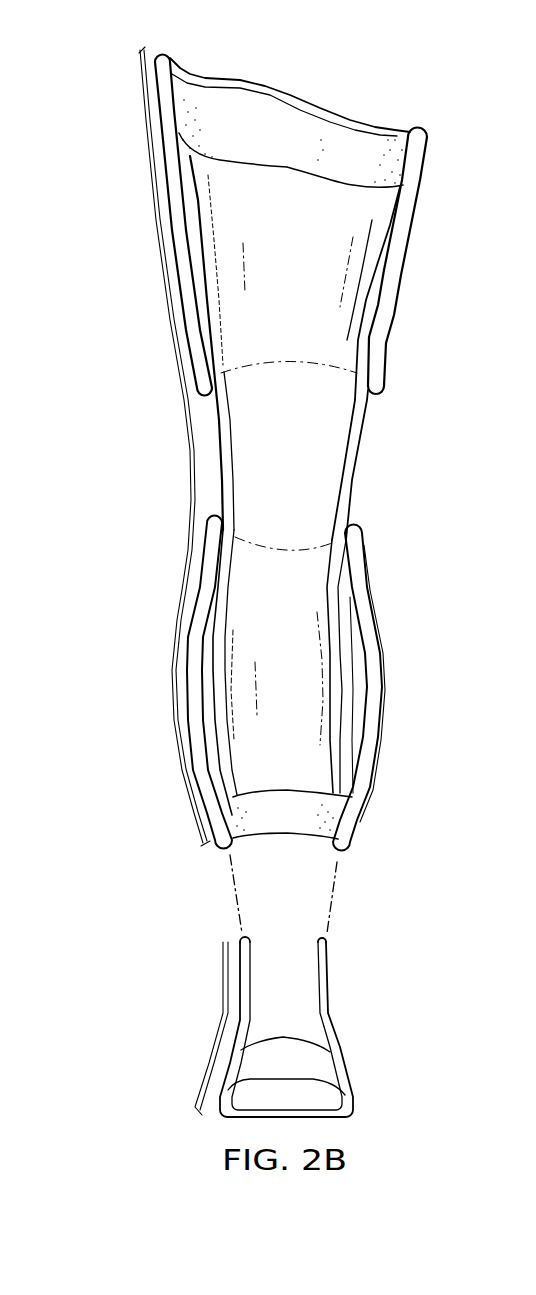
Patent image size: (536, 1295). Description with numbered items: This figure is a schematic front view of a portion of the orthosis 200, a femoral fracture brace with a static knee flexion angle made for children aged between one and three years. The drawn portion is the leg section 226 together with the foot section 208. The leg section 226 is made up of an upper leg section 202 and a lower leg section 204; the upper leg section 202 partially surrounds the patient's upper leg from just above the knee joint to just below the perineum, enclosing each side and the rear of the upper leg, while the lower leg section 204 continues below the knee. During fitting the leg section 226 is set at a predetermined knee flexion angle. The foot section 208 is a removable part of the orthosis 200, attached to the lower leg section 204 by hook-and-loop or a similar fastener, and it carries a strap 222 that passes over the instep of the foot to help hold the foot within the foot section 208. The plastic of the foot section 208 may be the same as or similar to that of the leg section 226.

The orthosis 200 is at (86, 66).
The upper leg section 202 is at (405, 247).
The lower leg section 204 is at (382, 677).
The foot section 208 is at (225, 1014).
The strap 222 is at (278, 1032).
The leg section 226 is at (190, 456).